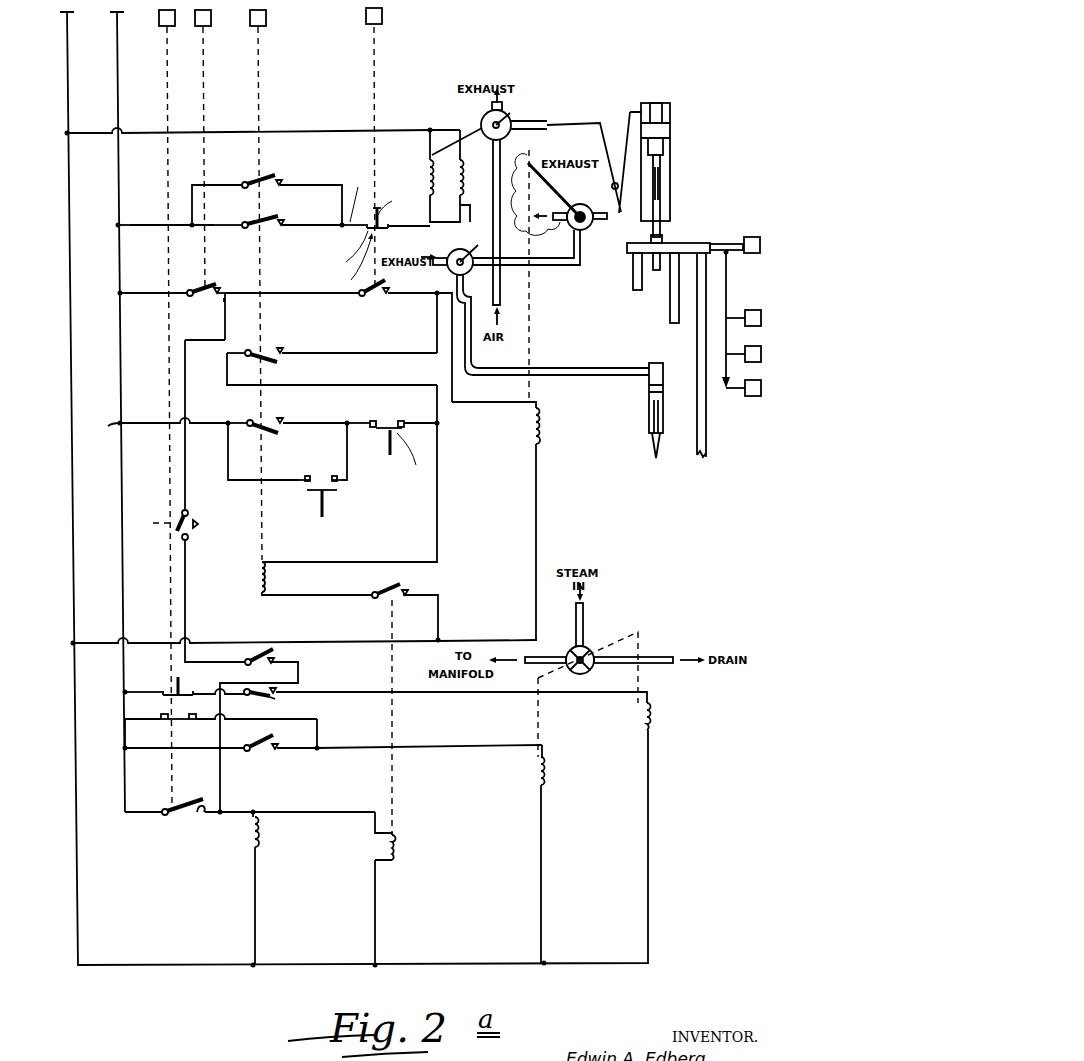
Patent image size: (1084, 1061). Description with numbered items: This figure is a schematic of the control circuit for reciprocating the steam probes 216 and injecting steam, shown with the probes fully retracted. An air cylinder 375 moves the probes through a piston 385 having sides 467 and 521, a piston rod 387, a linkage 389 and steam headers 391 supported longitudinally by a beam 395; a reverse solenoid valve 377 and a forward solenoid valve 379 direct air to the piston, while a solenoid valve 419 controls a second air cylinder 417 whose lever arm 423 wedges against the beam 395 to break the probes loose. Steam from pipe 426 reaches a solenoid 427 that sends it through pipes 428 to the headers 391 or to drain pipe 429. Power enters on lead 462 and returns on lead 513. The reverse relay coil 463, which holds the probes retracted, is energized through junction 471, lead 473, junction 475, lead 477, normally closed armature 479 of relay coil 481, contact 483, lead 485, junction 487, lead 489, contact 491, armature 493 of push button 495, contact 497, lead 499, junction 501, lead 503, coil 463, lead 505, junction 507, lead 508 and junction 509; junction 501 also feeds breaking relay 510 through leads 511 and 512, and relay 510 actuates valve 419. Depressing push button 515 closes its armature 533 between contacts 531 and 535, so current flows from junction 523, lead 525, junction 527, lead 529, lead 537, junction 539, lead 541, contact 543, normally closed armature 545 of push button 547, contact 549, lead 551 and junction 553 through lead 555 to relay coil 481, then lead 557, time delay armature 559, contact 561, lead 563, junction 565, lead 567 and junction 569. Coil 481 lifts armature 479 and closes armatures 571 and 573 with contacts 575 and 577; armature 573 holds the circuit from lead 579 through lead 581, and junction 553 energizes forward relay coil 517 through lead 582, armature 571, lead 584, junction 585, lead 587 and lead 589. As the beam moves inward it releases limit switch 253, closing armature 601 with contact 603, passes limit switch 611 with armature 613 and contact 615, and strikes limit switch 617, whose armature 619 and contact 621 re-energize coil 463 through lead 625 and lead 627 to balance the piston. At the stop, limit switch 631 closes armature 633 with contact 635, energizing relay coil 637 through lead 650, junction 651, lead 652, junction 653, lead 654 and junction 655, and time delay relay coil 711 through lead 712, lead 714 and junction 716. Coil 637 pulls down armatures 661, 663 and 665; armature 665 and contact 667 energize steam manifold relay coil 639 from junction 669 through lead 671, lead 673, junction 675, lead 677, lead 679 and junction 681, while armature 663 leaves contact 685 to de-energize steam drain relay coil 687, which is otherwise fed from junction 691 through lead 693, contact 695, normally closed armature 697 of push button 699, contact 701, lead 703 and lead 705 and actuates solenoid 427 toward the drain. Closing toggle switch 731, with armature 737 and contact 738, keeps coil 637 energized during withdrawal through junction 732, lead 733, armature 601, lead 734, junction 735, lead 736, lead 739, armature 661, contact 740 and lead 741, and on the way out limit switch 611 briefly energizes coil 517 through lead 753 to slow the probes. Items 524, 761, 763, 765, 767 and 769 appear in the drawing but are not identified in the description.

The lead 513 is at (67, 55).
The lead 462 is at (118, 55).
The limit switch 631 is at (159, 18).
The limit switch 253 is at (211, 20).
The limit switch 617 is at (266, 18).
The limit switch 611 is at (383, 15).
The beam 395 is at (734, 255).
The junction 509 is at (69, 133).
The lead 508 is at (374, 130).
The lead 505 is at (430, 148).
The junction 507 is at (437, 120).
The lead 512 is at (458, 125).
The reverse relay coil 463 is at (430, 166).
The breaking relay 510 is at (461, 182).
The lead 503 is at (445, 208).
The lead 511 is at (477, 216).
The valve 524 is at (471, 121).
The reverse solenoid valve 377 is at (513, 122).
The forward solenoid valve 379 is at (568, 214).
The solenoid valve 419 is at (466, 250).
The air cylinder 375 is at (672, 198).
The side of piston 521 is at (665, 112).
The piston 385 is at (670, 132).
The side of piston 467 is at (667, 147).
The piston rod 387 is at (661, 164).
The linkage 389 is at (663, 238).
The steam headers 391 is at (708, 242).
The probes 216 is at (707, 446).
The air cylinder 417 is at (649, 393).
The lever arm 423 is at (652, 452).
The junction 471 is at (118, 225).
The lead 473 is at (148, 236).
The junction 475 is at (192, 234).
The lead 477 is at (232, 235).
The lead 485 is at (298, 235).
The junction 487 is at (342, 232).
The lead 489 is at (357, 195).
The contact 491 is at (345, 252).
The push button 495 is at (349, 259).
The armature 493 is at (397, 200).
The lead 625 is at (192, 200).
The armature 619 is at (262, 178).
The contact 621 is at (280, 185).
The lead 627 is at (334, 184).
The normally closed armature 479 is at (266, 219).
The contact 483 is at (283, 221).
The contact 497 is at (385, 232).
The lead 499 is at (389, 228).
The junction 501 is at (391, 229).
The junction 732 is at (118, 293).
The lead 733 is at (150, 293).
The armature 601 is at (194, 288).
The contact 603 is at (223, 289).
The lead 753 is at (298, 296).
The normally open armature 613 is at (363, 298).
The contact 615 is at (388, 292).
The lead 654 is at (435, 298).
The junction 585 is at (435, 306).
The lead 587 is at (496, 404).
The forward relay coil 517 is at (540, 432).
The lead 589 is at (539, 493).
The junction 735 is at (227, 304).
The lead 734 is at (224, 300).
The lead 736 is at (214, 338).
The lead 739 is at (190, 588).
The toggle switch 731 is at (182, 517).
The armature 737 is at (196, 521).
The contact 738 is at (189, 538).
The junction 523 is at (112, 424).
The lead 525 is at (148, 432).
The junction 527 is at (227, 421).
The lead 579 is at (243, 420).
The armature 573 is at (263, 420).
The contact 577 is at (283, 421).
The lead 581 is at (310, 428).
The junction 539 is at (348, 420).
The lead 541 is at (363, 429).
The contact 543 is at (380, 420).
The contact 549 is at (404, 421).
The normally closed armature 545 is at (417, 457).
The push button 547 is at (392, 457).
The lead 551 is at (402, 429).
The junction 553 is at (438, 425).
The lead 529 is at (244, 479).
The contact 531 is at (303, 477).
The lead 537 is at (348, 468).
The contact 535 is at (340, 484).
The normally open armature 533 is at (310, 492).
The push button 515 is at (330, 501).
The armature 571 is at (259, 350).
The contact 575 is at (284, 350).
The lead 584 is at (351, 352).
The lead 582 is at (351, 385).
The lead 555 is at (438, 497).
The relay coil 481 is at (268, 582).
The lead 557 is at (341, 597).
The time delay armature 559 is at (398, 590).
The contact 561 is at (413, 592).
The lead 563 is at (420, 600).
The junction 565 is at (441, 640).
The junction 569 is at (76, 642).
The lead 567 is at (350, 641).
The armature 661 is at (266, 652).
The contact 740 is at (276, 661).
The lead 741 is at (300, 672).
The junction 691 is at (125, 692).
The push button 699 is at (172, 688).
The contact 701 is at (200, 690).
The lead 693 is at (125, 694).
The contact 695 is at (163, 696).
The normally closed armature 697 is at (161, 720).
The conductor 761 is at (125, 736).
The junction 669 is at (125, 750).
The contact 763 is at (160, 723).
The conductor 765 is at (167, 723).
The contact 767 is at (195, 722).
The conductor 769 is at (209, 722).
The lead 671 is at (167, 750).
The armature 665 is at (256, 745).
The contact 667 is at (279, 748).
The lead 673 is at (300, 750).
The junction 675 is at (317, 750).
The lead 677 is at (368, 748).
The lead 703 is at (244, 696).
The contact 685 is at (284, 690).
The normally closed armature 663 is at (273, 698).
The lead 705 is at (463, 694).
The steam drain relay coil 687 is at (655, 716).
The armature 633 is at (187, 801).
The contact 635 is at (200, 815).
The lead 650 is at (220, 815).
The junction 651 is at (226, 815).
The lead 652 is at (252, 815).
The lead 712 is at (346, 812).
The junction 653 is at (254, 810).
The relay coil 637 is at (262, 833).
The junction 655 is at (257, 963).
The time delay relay coil 711 is at (399, 850).
The lead 714 is at (377, 904).
The junction 716 is at (378, 963).
The steam manifold relay coil 639 is at (547, 772).
The lead 679 is at (543, 866).
The junction 681 is at (546, 962).
The solenoid 427 is at (592, 650).
The pipe 426 is at (584, 625).
The pipes 428 is at (543, 665).
The pipe 429 is at (666, 665).